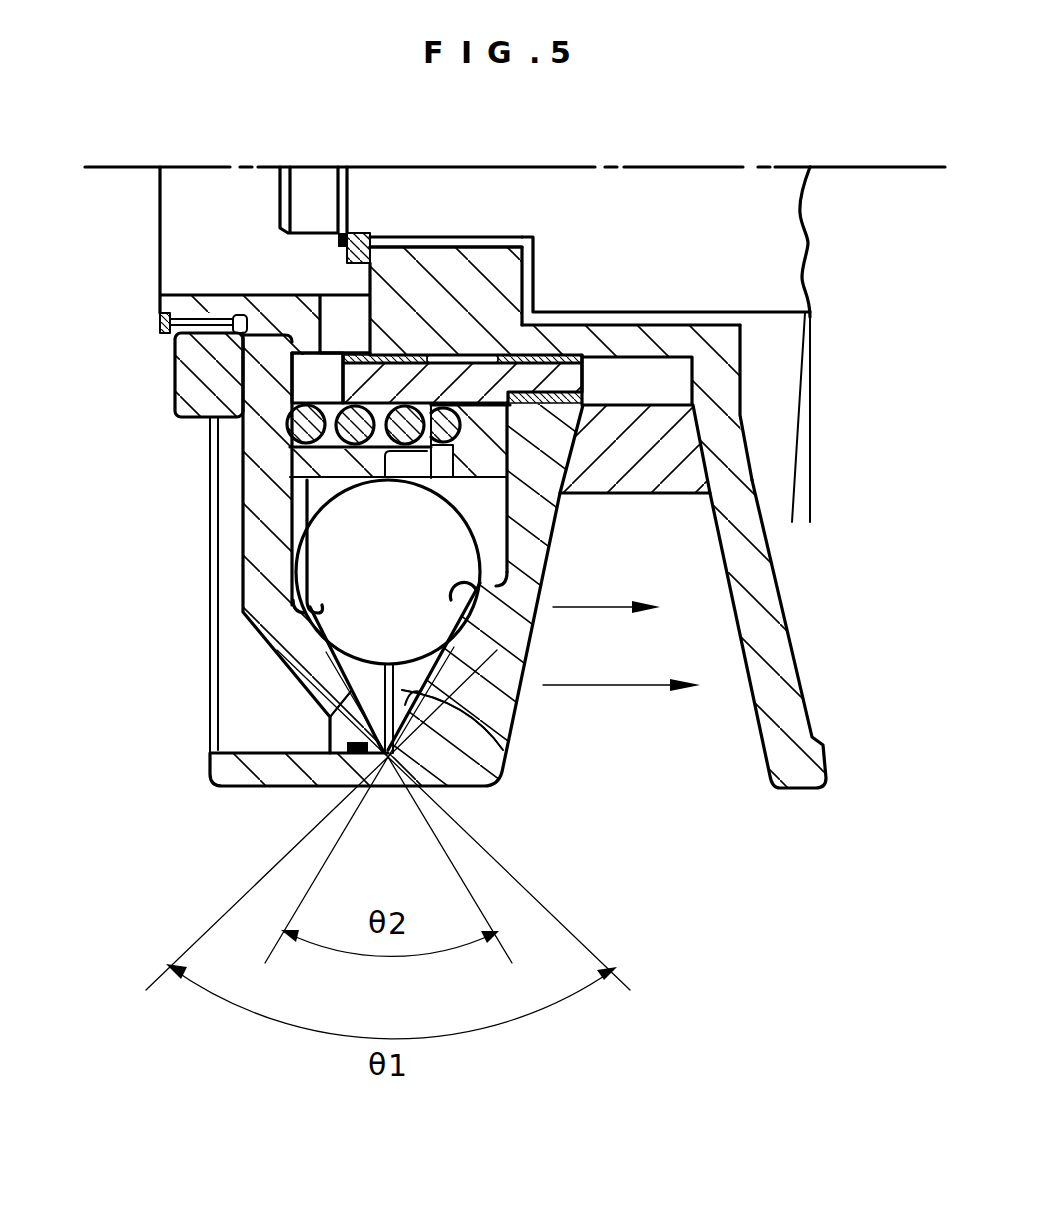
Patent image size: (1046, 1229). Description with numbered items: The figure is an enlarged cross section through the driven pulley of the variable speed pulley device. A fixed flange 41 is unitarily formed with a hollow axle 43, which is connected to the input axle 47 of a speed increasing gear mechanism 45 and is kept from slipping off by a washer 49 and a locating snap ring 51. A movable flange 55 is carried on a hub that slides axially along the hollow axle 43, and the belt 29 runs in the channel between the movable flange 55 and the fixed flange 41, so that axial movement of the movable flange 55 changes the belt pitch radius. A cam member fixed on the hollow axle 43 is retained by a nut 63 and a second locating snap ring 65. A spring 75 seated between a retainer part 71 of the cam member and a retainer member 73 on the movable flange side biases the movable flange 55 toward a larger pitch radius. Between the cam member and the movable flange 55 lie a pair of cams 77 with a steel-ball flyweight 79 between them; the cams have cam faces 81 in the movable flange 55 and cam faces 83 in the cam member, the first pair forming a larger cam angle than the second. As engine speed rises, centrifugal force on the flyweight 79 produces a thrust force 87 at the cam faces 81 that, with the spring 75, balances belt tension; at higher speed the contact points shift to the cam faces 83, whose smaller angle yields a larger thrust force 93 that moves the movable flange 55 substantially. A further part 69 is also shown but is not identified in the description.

The belt 29 is at (675, 438).
The fixed flange 41 is at (755, 784).
The hollow axle 43 is at (501, 269).
The speed increasing gear mechanism 45 is at (740, 254).
The input axle 47 is at (303, 190).
The washer 49 is at (347, 258).
The locating snap ring 51 is at (345, 241).
The movable flange 55 is at (510, 790).
The nut 63 is at (197, 393).
The locating snap ring 65 is at (167, 338).
The sleeve 69 is at (240, 752).
The retainer part 71 is at (328, 395).
The retainer member 73 is at (480, 413).
The spring 75 is at (300, 437).
The cams 77 is at (418, 628).
The flyweight 79 is at (403, 531).
The cam faces 81 is at (316, 600).
The cam faces 83 is at (470, 745).
The thrust force 87 is at (612, 605).
The thrust force 93 is at (627, 688).